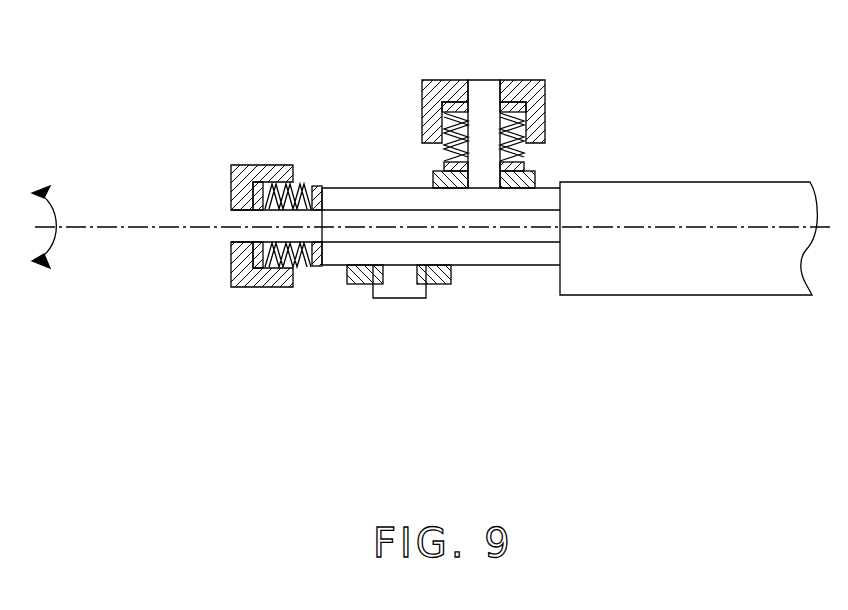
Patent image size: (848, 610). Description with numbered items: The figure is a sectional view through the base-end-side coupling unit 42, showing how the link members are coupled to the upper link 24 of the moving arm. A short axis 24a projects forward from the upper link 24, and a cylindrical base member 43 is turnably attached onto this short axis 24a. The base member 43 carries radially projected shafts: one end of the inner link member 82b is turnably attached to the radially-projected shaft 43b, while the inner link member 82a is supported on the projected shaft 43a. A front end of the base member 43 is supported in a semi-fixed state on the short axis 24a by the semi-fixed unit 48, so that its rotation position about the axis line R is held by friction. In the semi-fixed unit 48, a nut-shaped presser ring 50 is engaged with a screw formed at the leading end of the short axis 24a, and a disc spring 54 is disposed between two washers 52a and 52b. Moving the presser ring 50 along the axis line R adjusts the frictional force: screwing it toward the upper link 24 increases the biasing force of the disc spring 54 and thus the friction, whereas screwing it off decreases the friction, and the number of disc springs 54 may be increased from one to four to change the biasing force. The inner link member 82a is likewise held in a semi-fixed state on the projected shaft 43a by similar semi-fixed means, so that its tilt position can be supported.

The upper link 24 is at (705, 283).
The short axis 24a is at (502, 237).
The base-end-side coupling unit 42 is at (337, 385).
The cylindrical base member 43 is at (360, 192).
The projected shaft 43a is at (483, 90).
The radially-projected shaft 43b is at (402, 278).
The semi-fixed unit 48 is at (215, 305).
The presser ring 50 is at (540, 80).
The washer 52a is at (318, 185).
The washer 52b is at (237, 185).
The disc spring 54 is at (543, 127).
The inner link member 82a is at (423, 180).
The inner link member 82b is at (442, 285).
The axis line R is at (110, 230).